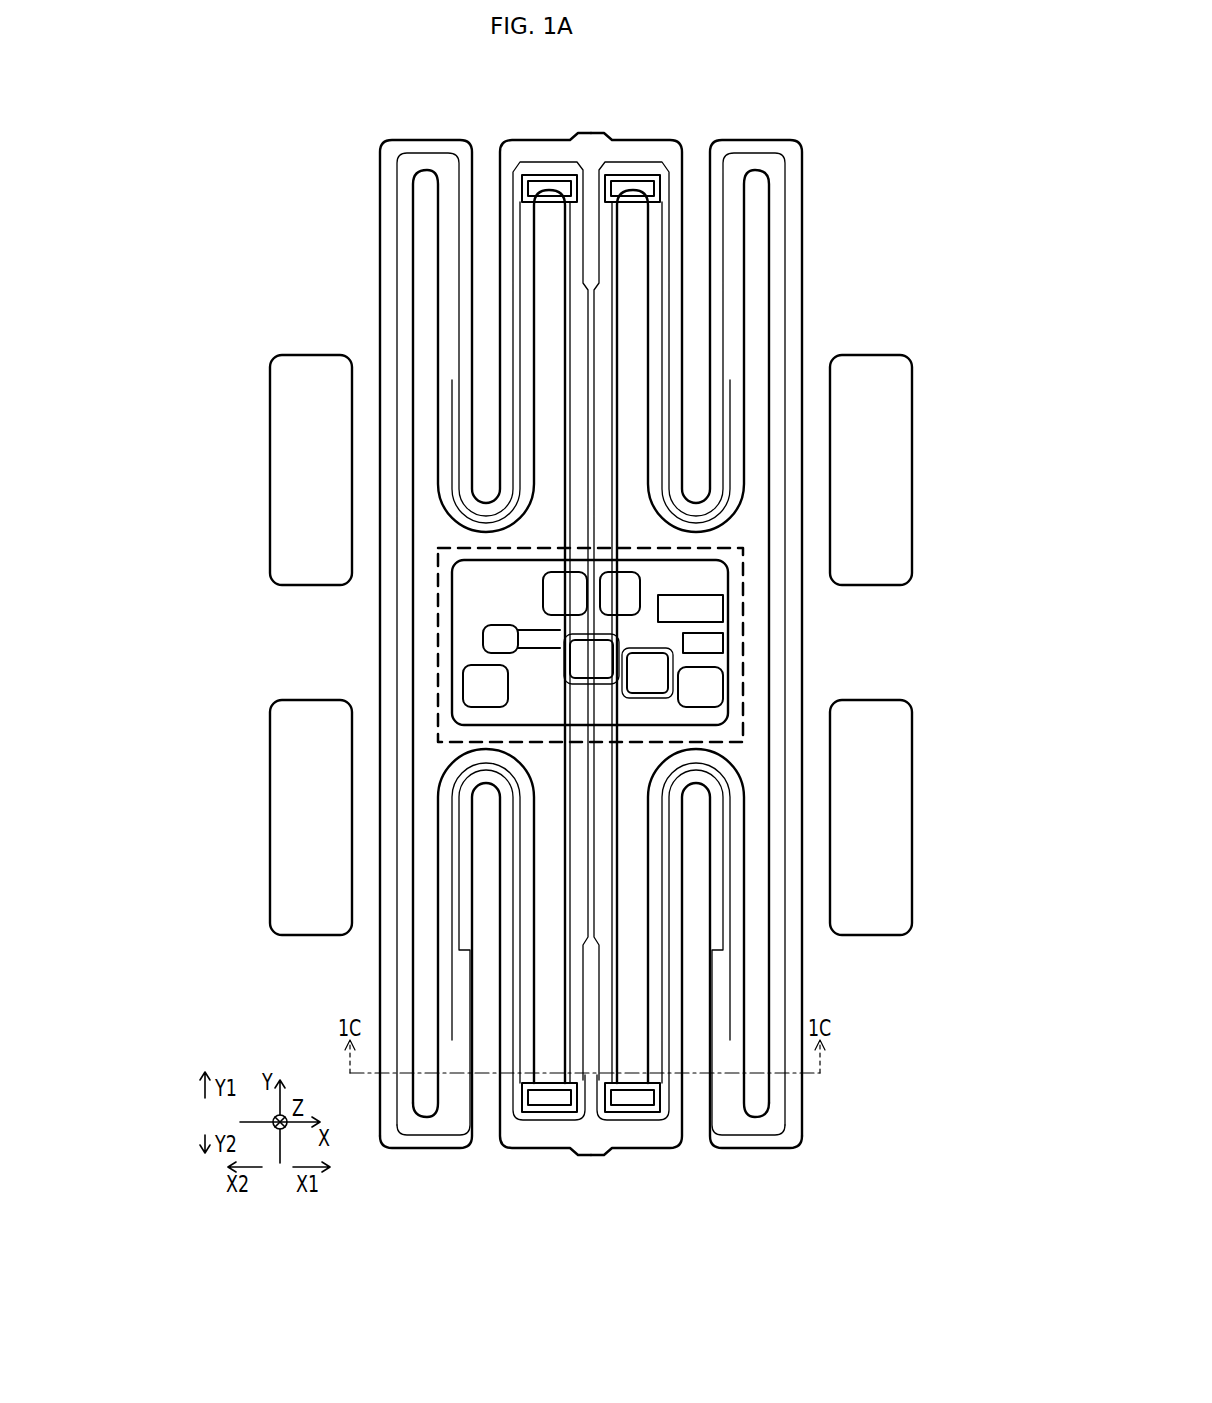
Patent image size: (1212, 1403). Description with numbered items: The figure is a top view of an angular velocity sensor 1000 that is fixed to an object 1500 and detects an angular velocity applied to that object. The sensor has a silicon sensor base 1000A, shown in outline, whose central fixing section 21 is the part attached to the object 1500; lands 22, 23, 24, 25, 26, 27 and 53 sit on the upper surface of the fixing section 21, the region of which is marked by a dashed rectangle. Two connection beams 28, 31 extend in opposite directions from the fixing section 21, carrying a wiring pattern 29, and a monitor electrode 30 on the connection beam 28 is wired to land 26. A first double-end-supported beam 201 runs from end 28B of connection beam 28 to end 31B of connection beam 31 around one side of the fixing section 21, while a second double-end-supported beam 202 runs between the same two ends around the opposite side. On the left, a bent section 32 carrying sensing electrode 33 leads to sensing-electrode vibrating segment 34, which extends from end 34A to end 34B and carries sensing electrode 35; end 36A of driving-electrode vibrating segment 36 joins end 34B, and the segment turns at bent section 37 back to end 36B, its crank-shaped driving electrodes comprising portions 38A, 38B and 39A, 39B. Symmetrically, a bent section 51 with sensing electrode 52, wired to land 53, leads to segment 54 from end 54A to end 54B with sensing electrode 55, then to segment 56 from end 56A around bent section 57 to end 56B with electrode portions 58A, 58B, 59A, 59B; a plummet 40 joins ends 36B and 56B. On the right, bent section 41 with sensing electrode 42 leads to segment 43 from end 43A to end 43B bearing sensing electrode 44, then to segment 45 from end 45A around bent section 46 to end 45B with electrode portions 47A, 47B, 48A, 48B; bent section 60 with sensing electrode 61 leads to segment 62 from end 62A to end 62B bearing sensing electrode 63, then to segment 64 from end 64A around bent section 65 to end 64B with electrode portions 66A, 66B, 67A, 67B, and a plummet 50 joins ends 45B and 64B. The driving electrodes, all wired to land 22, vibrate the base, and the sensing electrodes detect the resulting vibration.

The angular velocity sensor 1000 is at (862, 110).
The sensor base 1000A is at (795, 1150).
The double-end-supported beam 201 is at (412, 150).
The double-end-supported beam 202 is at (793, 147).
The object 1500 is at (437, 596).
The plummet 40 is at (305, 565).
The plummet 50 is at (880, 730).
The fixing section 21 is at (708, 580).
The land 22 is at (627, 583).
The land 23 is at (555, 605).
The land 24 is at (500, 638).
The land 25 is at (708, 687).
The land 26 is at (593, 662).
The land 27 is at (700, 643).
The connection beam 28 is at (385, 905).
The end of connection beam 28B is at (592, 1156).
The wiring pattern 29 is at (617, 258).
The monitor electrode 30 is at (545, 1108).
The connection beam 31 is at (680, 287).
The end of connection beam 31B is at (594, 136).
The bent section 32 is at (528, 1123).
The sensing electrode 33 is at (515, 1138).
The sensing-electrode vibrating segment 34 is at (512, 927).
The end of sensing-electrode vibrating segment 34A is at (500, 1110).
The end of sensing-electrode vibrating segment 34B is at (483, 777).
The sensing electrode 35 is at (523, 853).
The driving-electrode vibrating segment 36 is at (405, 820).
The end of driving-electrode vibrating segment 36A is at (470, 777).
The end of driving-electrode vibrating segment 36B is at (382, 703).
The bent section 37 is at (405, 1145).
The portion of driving electrode 38A is at (448, 1100).
The portion of driving electrode 38B is at (460, 915).
The portion of driving electrode 39A is at (405, 988).
The portion of driving electrode 39B is at (388, 873).
The bent section 41 is at (648, 1135).
The sensing electrode 42 is at (628, 1103).
The sensing-electrode vibrating segment 43 is at (665, 965).
The end of sensing-electrode vibrating segment 43A is at (672, 1135).
The end of sensing-electrode vibrating segment 43B is at (700, 778).
The sensing electrode 44 is at (655, 985).
The driving-electrode vibrating segment 45 is at (795, 1085).
The end of driving-electrode vibrating segment 45A is at (735, 783).
The end of driving-electrode vibrating segment 45B is at (790, 700).
The bent section 46 is at (770, 1150).
The portion of driving electrode 47A is at (762, 1125).
The portion of driving electrode 47B is at (725, 900).
The portion of driving electrode 48A is at (780, 1097).
The portion of driving electrode 48B is at (790, 880).
The bent section 51 is at (522, 152).
The sensing electrode 52 is at (543, 178).
The land 53 is at (650, 663).
The sensing-electrode vibrating segment 54 is at (450, 228).
The end of sensing-electrode vibrating segment 54A is at (530, 148).
The end of sensing-electrode vibrating segment 54B is at (458, 497).
The sensing electrode 55 is at (527, 288).
The driving-electrode vibrating segment 56 is at (405, 410).
The end of driving-electrode vibrating segment 56A is at (485, 505).
The end of driving-electrode vibrating segment 56B is at (377, 580).
The bent section 57 is at (420, 165).
The portion of driving electrode 58A is at (405, 230).
The portion of driving electrode 58B is at (460, 385).
The portion of driving electrode 59A is at (403, 283).
The portion of driving electrode 59B is at (385, 392).
The bent section 60 is at (635, 145).
The sensing electrode 61 is at (645, 178).
The sensing-electrode vibrating segment 62 is at (793, 263).
The end of sensing-electrode vibrating segment 62A is at (674, 150).
The end of sensing-electrode vibrating segment 62B is at (720, 495).
The sensing electrode 63 is at (602, 277).
The driving-electrode vibrating segment 64 is at (772, 340).
The end of driving-electrode vibrating segment 64A is at (700, 508).
The end of driving-electrode vibrating segment 64B is at (707, 608).
The bent section 65 is at (753, 148).
The portion of driving electrode 66A is at (727, 230).
The portion of driving electrode 66B is at (717, 353).
The portion of driving electrode 67A is at (790, 365).
The portion of driving electrode 67B is at (795, 415).